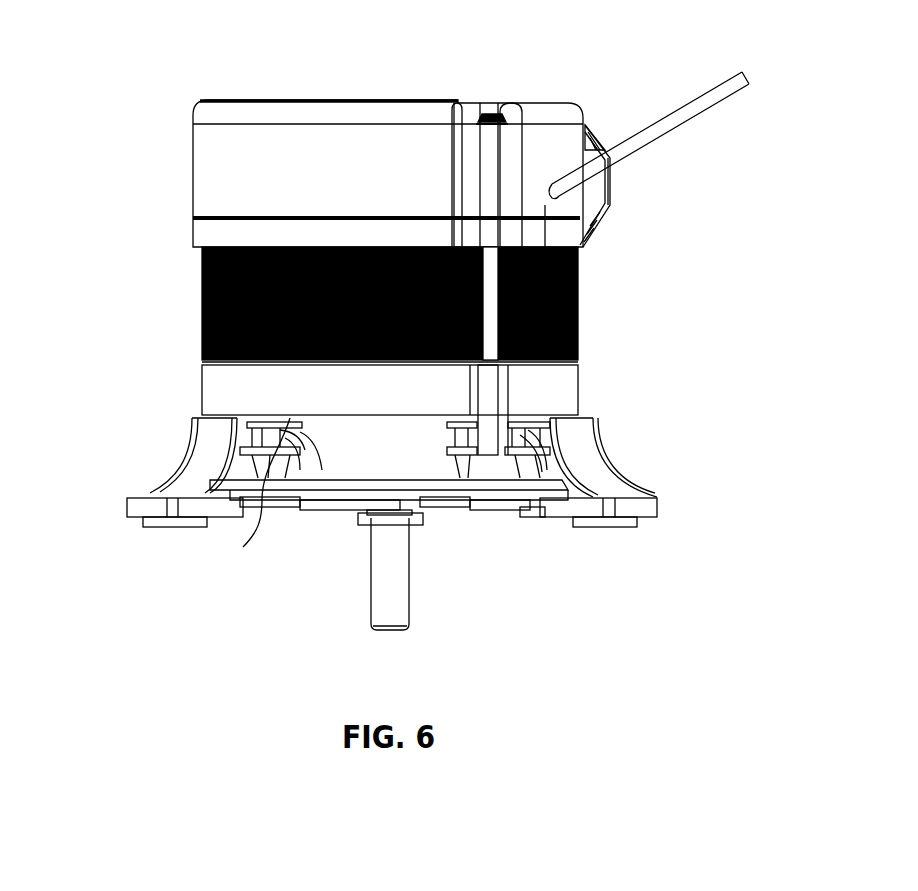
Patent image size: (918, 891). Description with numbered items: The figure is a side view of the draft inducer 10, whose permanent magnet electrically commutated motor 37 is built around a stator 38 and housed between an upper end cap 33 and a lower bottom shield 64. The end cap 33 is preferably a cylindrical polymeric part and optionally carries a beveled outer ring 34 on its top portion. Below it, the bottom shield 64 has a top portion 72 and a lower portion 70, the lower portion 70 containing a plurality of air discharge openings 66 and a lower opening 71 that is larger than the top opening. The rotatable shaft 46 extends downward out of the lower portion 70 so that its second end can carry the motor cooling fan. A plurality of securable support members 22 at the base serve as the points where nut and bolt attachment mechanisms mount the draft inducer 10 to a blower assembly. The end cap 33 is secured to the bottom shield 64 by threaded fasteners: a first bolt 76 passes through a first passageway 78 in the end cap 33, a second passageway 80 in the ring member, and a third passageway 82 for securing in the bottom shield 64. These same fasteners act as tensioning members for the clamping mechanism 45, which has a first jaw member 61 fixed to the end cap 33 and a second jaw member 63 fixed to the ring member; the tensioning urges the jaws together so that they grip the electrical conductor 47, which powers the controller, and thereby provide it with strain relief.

The draft inducer 10 is at (407, 318).
The securable support members 22 is at (132, 508).
The end cap 33 is at (362, 100).
The beveled outer ring 34 is at (580, 113).
The permanent magnet electrically commutated motor 37 is at (447, 304).
The stator 38 is at (578, 310).
The clamping mechanism 45 is at (618, 205).
The rotatable shaft 46 is at (402, 562).
The electrical conductor 47 is at (716, 94).
The first jaw member 61 is at (600, 132).
The second jaw member 63 is at (580, 180).
The bottom shield 64 is at (387, 472).
The air discharge openings 66 is at (243, 547).
The lower portion 70 is at (550, 497).
The lower opening 71 is at (540, 510).
The top portion 72 is at (572, 397).
The first bolt 76 is at (497, 113).
The first passageway 78 is at (503, 147).
The second passageway 80 is at (545, 210).
The third passageway 82 is at (500, 402).